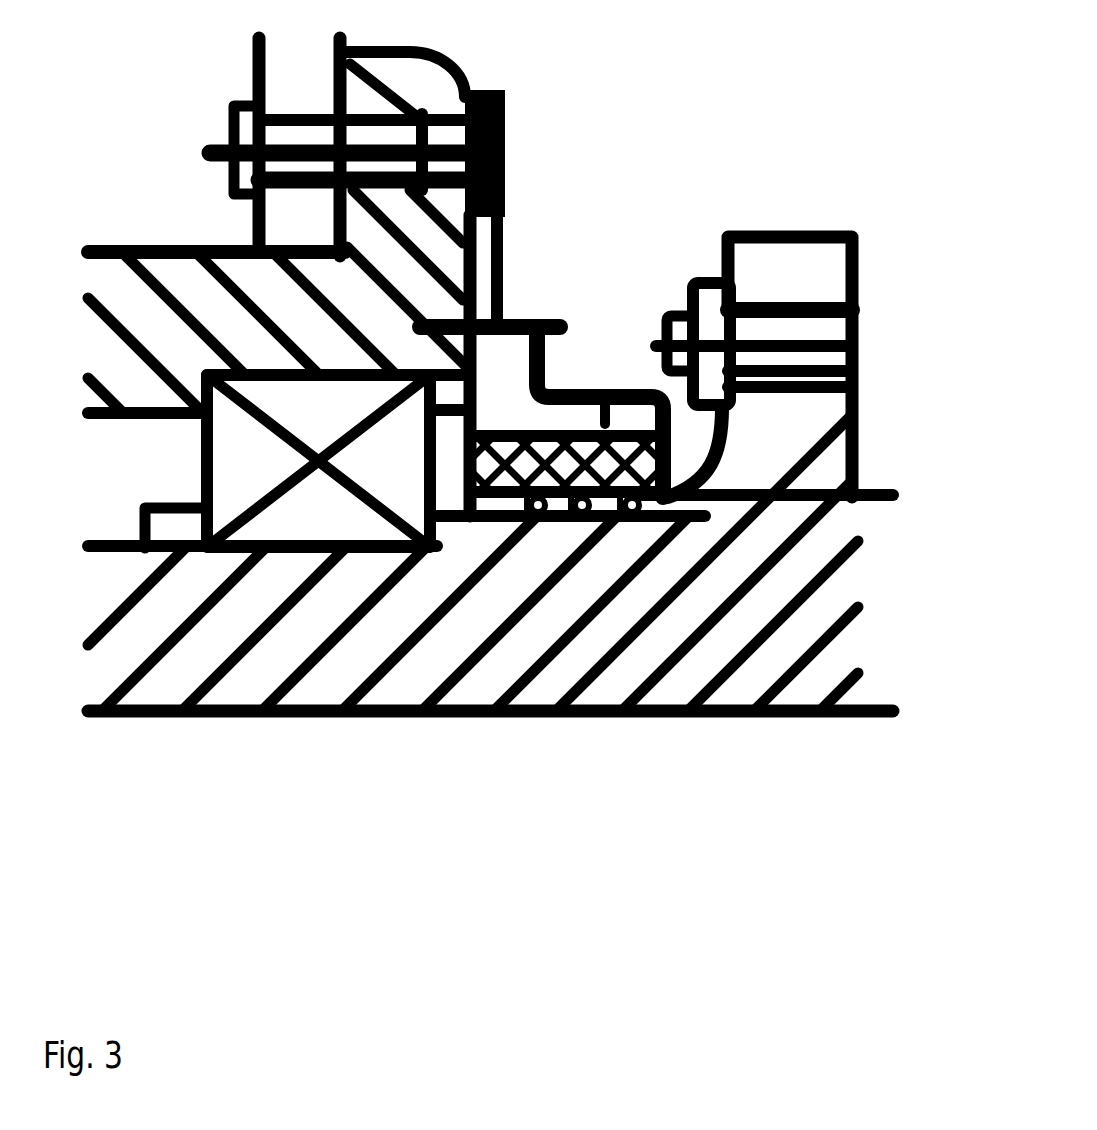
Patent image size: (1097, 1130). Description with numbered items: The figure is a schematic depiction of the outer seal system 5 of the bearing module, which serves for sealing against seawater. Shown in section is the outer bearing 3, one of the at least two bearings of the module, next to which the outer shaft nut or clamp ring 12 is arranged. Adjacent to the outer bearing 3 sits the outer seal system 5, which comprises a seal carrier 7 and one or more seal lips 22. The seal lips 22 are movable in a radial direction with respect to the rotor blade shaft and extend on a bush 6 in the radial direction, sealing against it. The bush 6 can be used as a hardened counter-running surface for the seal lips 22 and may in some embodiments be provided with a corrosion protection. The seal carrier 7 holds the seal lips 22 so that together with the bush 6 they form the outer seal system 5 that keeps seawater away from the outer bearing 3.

The outer bearing 3 is at (330, 516).
The outer seal system 5 is at (548, 508).
The bush 6 is at (603, 516).
The seal carrier 7 is at (657, 525).
The outer shaft nut or clamp ring 12 is at (182, 536).
The seal lips 22 is at (804, 489).